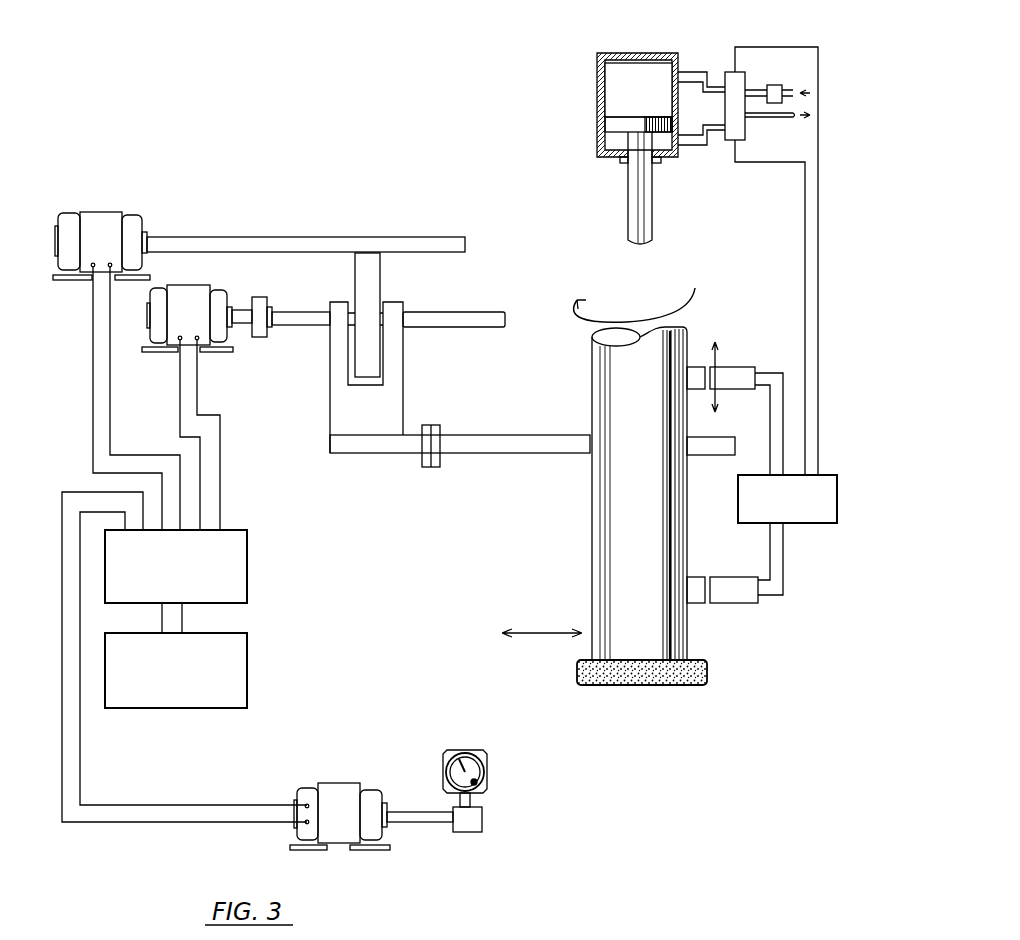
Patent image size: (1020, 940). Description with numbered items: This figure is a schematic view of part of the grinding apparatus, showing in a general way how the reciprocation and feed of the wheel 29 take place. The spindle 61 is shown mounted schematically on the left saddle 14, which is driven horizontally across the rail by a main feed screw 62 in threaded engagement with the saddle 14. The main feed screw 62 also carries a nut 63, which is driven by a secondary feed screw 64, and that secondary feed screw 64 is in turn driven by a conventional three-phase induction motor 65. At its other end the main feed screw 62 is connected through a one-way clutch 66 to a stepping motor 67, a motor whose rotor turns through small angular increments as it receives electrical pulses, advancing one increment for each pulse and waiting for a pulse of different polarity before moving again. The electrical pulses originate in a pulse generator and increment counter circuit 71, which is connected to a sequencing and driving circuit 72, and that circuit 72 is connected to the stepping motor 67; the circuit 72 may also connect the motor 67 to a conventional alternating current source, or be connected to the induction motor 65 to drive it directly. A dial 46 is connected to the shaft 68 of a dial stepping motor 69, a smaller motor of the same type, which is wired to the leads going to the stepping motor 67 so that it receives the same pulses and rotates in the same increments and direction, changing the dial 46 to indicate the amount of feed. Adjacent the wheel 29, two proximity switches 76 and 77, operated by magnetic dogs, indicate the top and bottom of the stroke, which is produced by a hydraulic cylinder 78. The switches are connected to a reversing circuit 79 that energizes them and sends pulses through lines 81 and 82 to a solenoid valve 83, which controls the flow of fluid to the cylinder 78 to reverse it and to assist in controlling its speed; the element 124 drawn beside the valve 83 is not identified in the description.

The left saddle 14 is at (403, 443).
The wheel 29 is at (632, 677).
The dial 46 is at (473, 770).
The spindle 61 is at (612, 513).
The main feed screw 62 is at (448, 310).
The nut 63 is at (370, 293).
The secondary feed screw 64 is at (225, 242).
The three-phase induction motor 65 is at (102, 225).
The one-way clutch 66 is at (258, 303).
The stepping motor 67 is at (185, 292).
The shaft 68 is at (400, 812).
The dial stepping motor 69 is at (330, 797).
The pulse generator and increment counter circuit 71 is at (238, 683).
The sequencing and driving circuit 72 is at (235, 567).
The proximity switch 76 is at (733, 380).
The proximity switch 77 is at (727, 590).
The hydraulic cylinder 78 is at (597, 90).
The reversing circuit 79 is at (815, 517).
The line 81 is at (805, 205).
The line 82 is at (818, 232).
The solenoid valve 83 is at (733, 72).
The solenoid 124 is at (775, 85).